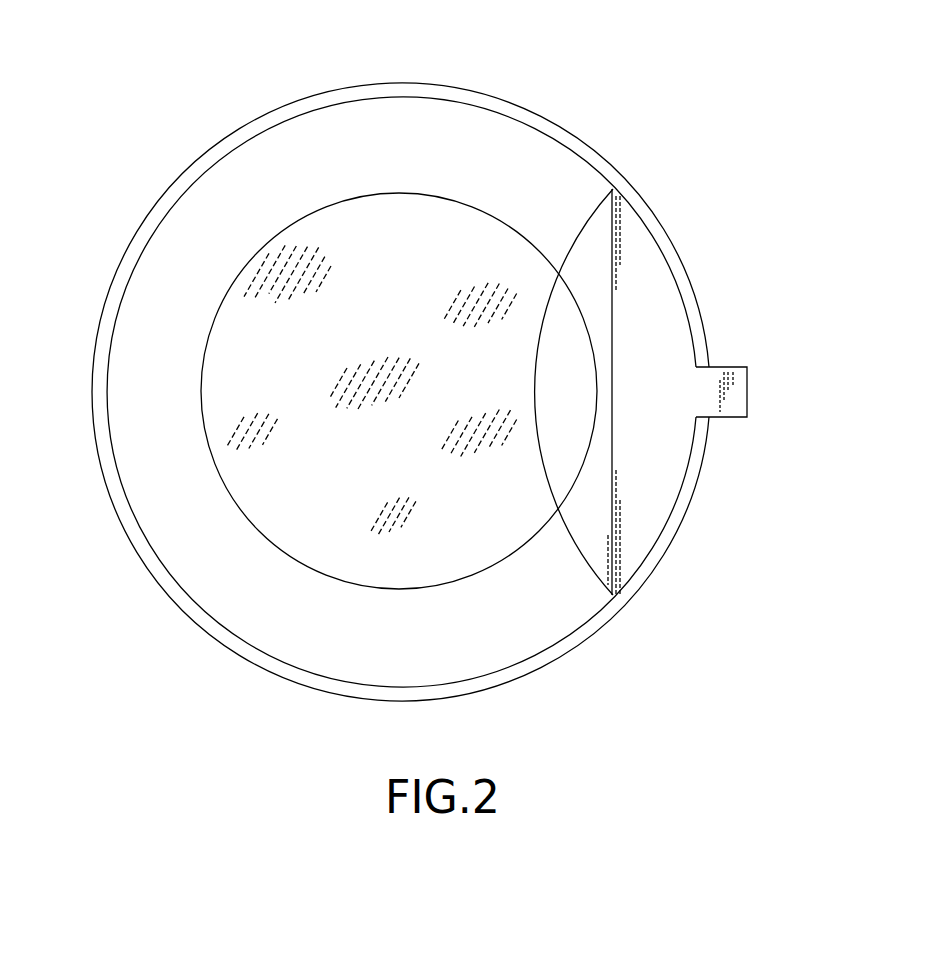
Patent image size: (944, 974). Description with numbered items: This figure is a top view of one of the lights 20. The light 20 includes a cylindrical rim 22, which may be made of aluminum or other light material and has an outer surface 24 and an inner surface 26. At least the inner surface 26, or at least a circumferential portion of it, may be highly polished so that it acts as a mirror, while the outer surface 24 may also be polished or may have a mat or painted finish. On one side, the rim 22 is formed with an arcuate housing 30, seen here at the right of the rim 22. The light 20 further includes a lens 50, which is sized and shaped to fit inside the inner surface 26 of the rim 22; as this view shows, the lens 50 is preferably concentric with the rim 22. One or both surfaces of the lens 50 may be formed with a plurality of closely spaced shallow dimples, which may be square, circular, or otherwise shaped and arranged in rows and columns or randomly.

The light 20 is at (727, 130).
The cylindrical rim 22 is at (485, 101).
The outer surface 24 is at (242, 136).
The inner surface 26 is at (587, 157).
The arcuate housing 30 is at (657, 310).
The lens 50 is at (243, 487).